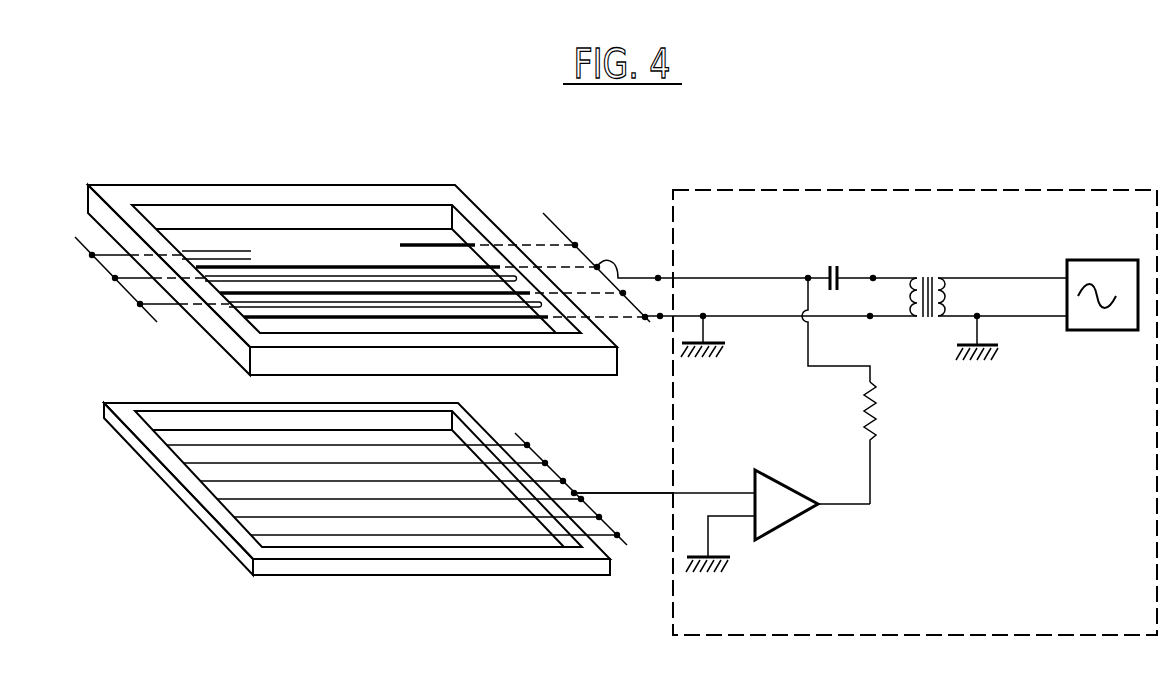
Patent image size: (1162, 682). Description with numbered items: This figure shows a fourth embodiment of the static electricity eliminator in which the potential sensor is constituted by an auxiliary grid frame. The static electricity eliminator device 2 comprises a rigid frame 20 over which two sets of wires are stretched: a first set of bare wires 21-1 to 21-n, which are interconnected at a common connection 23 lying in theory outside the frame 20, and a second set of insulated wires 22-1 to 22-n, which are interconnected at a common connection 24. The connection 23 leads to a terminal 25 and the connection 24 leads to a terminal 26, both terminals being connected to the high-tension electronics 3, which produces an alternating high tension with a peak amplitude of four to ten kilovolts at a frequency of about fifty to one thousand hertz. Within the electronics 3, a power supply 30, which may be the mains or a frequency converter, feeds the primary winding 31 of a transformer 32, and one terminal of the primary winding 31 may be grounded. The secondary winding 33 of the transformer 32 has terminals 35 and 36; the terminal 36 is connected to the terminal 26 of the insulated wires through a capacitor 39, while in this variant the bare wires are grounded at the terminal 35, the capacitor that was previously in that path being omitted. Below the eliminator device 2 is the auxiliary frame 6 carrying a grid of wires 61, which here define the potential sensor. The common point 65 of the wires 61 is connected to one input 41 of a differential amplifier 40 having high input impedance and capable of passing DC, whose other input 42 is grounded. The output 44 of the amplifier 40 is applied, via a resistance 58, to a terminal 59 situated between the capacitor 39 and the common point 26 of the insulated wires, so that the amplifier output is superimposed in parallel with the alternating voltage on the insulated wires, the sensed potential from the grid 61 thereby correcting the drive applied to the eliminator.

The static electricity eliminator device 2 is at (268, 168).
The rigid frame 20 is at (117, 192).
The wire of second set 22-n is at (212, 252).
The wire of second set 22-1 is at (300, 303).
The wire of first set 21-1 is at (355, 318).
The wire of first set 21-n is at (418, 245).
The common connection of first set of wires 23 is at (596, 263).
The common connection of second set of wires 24 is at (116, 283).
The terminal 25 is at (659, 320).
The terminal 26 is at (657, 276).
The high-tension electronics 3 is at (950, 190).
The terminal 59 is at (806, 277).
The capacitor 39 is at (836, 266).
The terminal of secondary winding 36 is at (873, 277).
The secondary winding 33 is at (912, 277).
The primary winding 31 is at (942, 277).
The transformer 32 is at (927, 287).
The power supply 30 is at (1087, 274).
The terminal of secondary winding 35 is at (870, 322).
The resistance 58 is at (878, 420).
The differential amplifier 40 is at (782, 495).
The amplifier input 41 is at (752, 491).
The amplifier input 42 is at (752, 518).
The amplifier output 44 is at (830, 505).
The common point of wires 65 is at (579, 492).
The auxiliary frame 6 is at (292, 568).
The grid of wires 61 is at (380, 445).